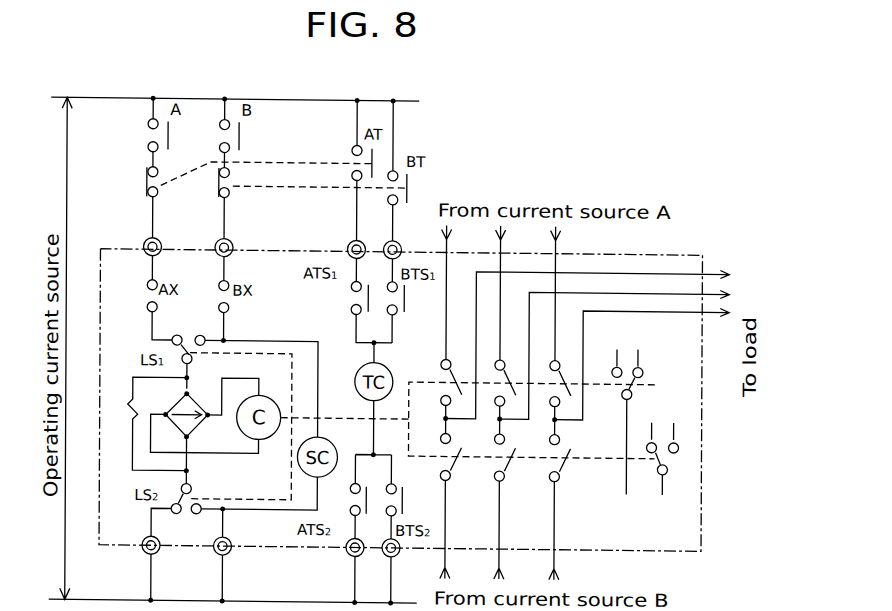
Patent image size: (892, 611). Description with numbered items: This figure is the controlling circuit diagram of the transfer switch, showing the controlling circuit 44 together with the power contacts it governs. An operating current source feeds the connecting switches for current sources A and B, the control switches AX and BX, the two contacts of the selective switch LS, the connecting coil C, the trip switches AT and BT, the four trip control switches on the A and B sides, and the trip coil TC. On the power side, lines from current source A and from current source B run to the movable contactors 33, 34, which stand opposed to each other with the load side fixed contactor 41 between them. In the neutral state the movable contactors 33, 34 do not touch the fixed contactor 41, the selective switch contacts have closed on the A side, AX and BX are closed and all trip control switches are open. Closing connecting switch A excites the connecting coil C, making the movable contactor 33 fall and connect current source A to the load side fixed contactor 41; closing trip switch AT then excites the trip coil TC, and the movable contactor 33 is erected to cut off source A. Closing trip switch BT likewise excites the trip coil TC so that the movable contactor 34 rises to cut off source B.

The movable contactor 33 is at (450, 381).
The movable contactor 34 is at (562, 463).
The fixed contactor 41 is at (557, 429).
The controlling circuit 44 is at (567, 346).